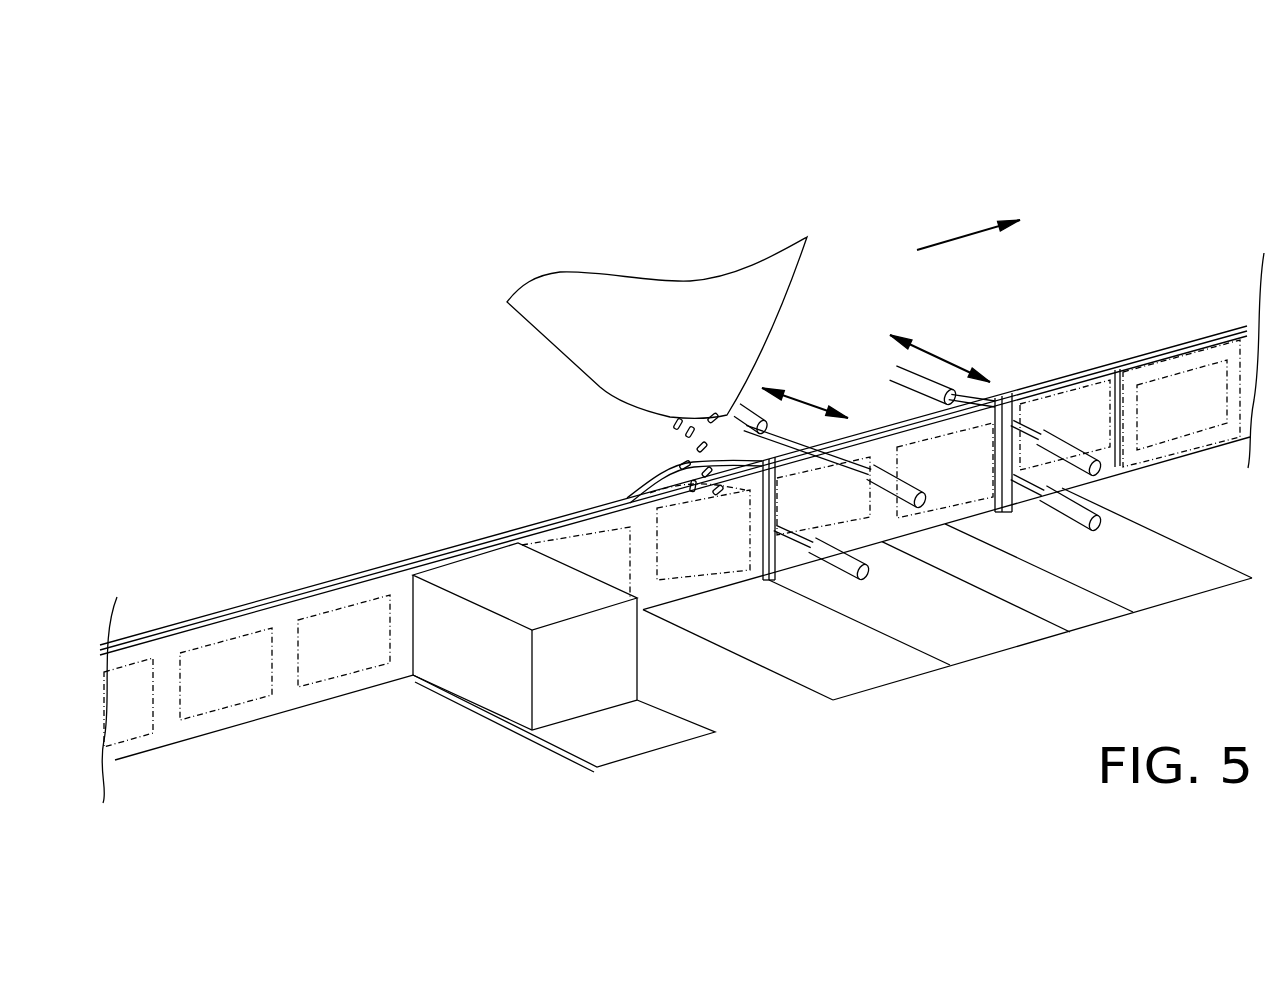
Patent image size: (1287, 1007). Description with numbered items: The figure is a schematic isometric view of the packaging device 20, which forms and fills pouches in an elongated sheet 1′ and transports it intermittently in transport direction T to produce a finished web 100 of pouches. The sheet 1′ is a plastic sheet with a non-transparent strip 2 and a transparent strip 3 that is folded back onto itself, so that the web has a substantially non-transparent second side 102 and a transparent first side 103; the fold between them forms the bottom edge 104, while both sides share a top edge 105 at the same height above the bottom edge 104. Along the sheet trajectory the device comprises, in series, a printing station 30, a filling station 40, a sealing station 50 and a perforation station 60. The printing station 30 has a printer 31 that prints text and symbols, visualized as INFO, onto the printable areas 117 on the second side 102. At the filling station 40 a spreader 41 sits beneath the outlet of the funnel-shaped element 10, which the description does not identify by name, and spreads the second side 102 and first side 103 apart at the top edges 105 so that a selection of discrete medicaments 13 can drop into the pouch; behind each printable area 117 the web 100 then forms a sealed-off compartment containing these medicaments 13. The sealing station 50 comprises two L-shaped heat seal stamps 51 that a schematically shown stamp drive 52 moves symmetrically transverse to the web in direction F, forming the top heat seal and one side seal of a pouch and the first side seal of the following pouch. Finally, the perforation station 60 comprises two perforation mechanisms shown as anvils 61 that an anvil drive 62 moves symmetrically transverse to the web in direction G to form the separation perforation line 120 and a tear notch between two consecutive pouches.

The elongated sheet 1′ is at (157, 750).
The non-transparent strip 2 is at (357, 593).
The transparent strip 3 is at (147, 630).
The feeding funnel 10 is at (670, 293).
The discrete medicaments 13 is at (683, 435).
The packaging device 20 is at (1223, 152).
The printing station 30 is at (637, 747).
The printer 31 is at (475, 572).
The filling station 40 is at (875, 679).
The spreader 41 is at (670, 467).
The sealing station 50 is at (993, 647).
The L-shaped heat seal stamps 51 is at (878, 438).
The stamp drive 52 is at (738, 426).
The perforation station 60 is at (1175, 596).
The anvils 61 is at (1000, 398).
The anvil drive 62 is at (900, 375).
The web of pouches 100 is at (1110, 345).
The second side 102 is at (292, 627).
The first side 103 is at (230, 608).
The bottom edge 104 is at (300, 708).
The top edge 105 is at (630, 495).
The printable areas 117 is at (357, 677).
The separation perforation line 120 is at (1240, 383).